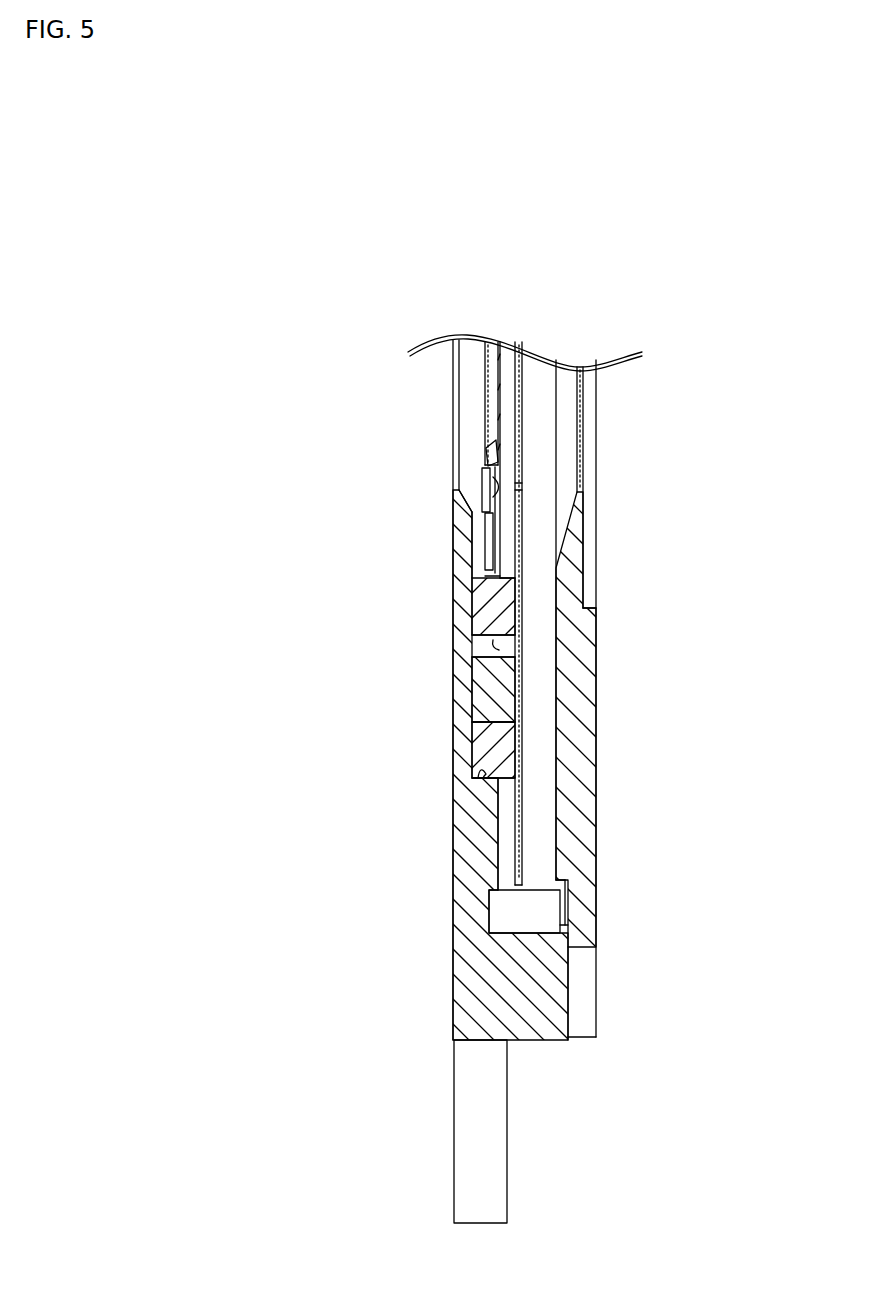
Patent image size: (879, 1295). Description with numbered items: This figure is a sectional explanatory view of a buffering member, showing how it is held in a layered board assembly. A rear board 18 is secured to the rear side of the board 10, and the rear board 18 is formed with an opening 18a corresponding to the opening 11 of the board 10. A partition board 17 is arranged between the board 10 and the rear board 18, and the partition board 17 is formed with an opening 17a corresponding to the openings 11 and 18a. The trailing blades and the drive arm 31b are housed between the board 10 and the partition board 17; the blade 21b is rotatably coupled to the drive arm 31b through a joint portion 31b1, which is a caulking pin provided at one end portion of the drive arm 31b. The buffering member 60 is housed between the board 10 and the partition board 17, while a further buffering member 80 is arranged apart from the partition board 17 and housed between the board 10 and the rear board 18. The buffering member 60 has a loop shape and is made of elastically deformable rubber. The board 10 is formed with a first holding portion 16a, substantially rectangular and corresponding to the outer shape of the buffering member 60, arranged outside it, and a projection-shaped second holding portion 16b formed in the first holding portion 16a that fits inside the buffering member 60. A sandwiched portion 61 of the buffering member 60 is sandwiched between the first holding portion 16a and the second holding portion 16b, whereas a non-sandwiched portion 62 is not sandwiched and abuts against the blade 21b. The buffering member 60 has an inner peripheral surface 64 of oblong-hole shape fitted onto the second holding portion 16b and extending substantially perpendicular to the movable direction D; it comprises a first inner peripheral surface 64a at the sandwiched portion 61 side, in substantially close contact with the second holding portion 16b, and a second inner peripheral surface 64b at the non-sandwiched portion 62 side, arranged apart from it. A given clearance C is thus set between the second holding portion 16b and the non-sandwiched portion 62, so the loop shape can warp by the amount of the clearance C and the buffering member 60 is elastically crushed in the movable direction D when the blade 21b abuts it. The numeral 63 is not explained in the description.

The board 10 is at (445, 1005).
The opening 11 is at (455, 491).
The first holding portion 16a is at (488, 778).
The second holding portion 16b is at (485, 685).
The partition board 17 is at (536, 793).
The opening 17a is at (517, 483).
The rear board 18 is at (606, 872).
The opening 18a is at (578, 457).
The blade 21b is at (495, 542).
The drive arm 31b is at (485, 373).
The joint portion 31b1 is at (487, 462).
The buffering member 60 is at (458, 772).
The sandwiched portion 61 is at (485, 740).
The non-sandwiched portion 62 is at (488, 615).
The shaft coupling portion 63 is at (515, 572).
The inner peripheral surface 64 is at (616, 691).
The first inner peripheral surface 64a is at (510, 723).
The second inner peripheral surface 64b is at (497, 652).
The buffering member 80 is at (532, 915).
The clearance C is at (472, 658).
The movable direction D is at (396, 582).